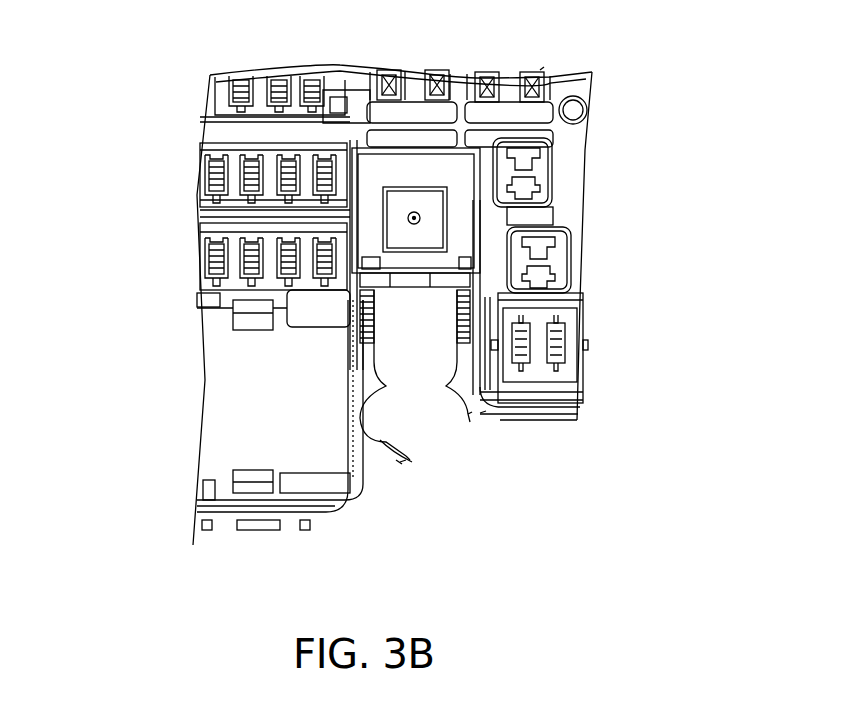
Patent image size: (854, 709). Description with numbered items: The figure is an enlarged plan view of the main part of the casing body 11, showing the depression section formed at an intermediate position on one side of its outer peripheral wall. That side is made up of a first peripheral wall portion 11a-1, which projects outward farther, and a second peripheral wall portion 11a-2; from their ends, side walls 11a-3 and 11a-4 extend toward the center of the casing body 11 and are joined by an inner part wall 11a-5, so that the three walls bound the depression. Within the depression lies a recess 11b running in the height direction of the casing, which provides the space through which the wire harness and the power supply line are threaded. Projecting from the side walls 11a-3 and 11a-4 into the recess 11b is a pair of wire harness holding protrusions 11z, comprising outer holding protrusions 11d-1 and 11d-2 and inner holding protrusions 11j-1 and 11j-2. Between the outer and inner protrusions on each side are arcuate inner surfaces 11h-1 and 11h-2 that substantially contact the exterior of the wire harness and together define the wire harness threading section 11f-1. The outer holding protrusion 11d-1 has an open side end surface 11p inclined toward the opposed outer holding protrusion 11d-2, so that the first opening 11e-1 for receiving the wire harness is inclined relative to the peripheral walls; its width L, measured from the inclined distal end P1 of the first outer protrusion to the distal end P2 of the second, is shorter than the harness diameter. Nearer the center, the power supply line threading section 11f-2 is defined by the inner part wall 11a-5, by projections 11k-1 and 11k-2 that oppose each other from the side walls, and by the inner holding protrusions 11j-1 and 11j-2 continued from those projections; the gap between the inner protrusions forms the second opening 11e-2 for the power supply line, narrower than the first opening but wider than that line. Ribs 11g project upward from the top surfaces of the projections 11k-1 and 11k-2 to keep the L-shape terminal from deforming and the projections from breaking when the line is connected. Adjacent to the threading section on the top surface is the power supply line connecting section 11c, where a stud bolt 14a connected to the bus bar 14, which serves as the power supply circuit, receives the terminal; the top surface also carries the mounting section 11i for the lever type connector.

The casing body 11 is at (543, 68).
The first peripheral wall portion 11a-1 is at (220, 513).
The second peripheral wall portion 11a-2 is at (565, 410).
The side wall 11a-3 is at (360, 365).
The side wall 11a-4 is at (503, 312).
The inner part wall 11a-5 is at (412, 275).
The recess 11b is at (355, 440).
The power supply line connecting section 11c is at (428, 170).
The outer holding protrusion 11d-1 is at (383, 470).
The outer holding protrusion 11d-2 is at (483, 413).
The first opening 11e-1 is at (437, 440).
The second opening 11e-2 is at (460, 315).
The wire harness threading section 11f-1 is at (405, 463).
The power supply line threading section 11f-2 is at (462, 328).
The ribs 11g is at (360, 300).
The arcuate inner surface 11h-1 is at (368, 450).
The arcuate inner surface 11h-2 is at (465, 392).
The mounting section 11i is at (218, 360).
The inner holding protrusion 11j-1 is at (370, 352).
The inner holding protrusion 11j-2 is at (462, 357).
The projection 11k-1 is at (222, 273).
The projection 11k-2 is at (470, 282).
The open side end surface 11p is at (400, 462).
The wire harness holding protrusions 11z is at (480, 405).
The bus bar 14 is at (398, 200).
The stud bolt 14a is at (420, 215).
The width of the first opening L is at (465, 408).
The inclined distal end P1 is at (407, 412).
The distal end P2 is at (470, 413).